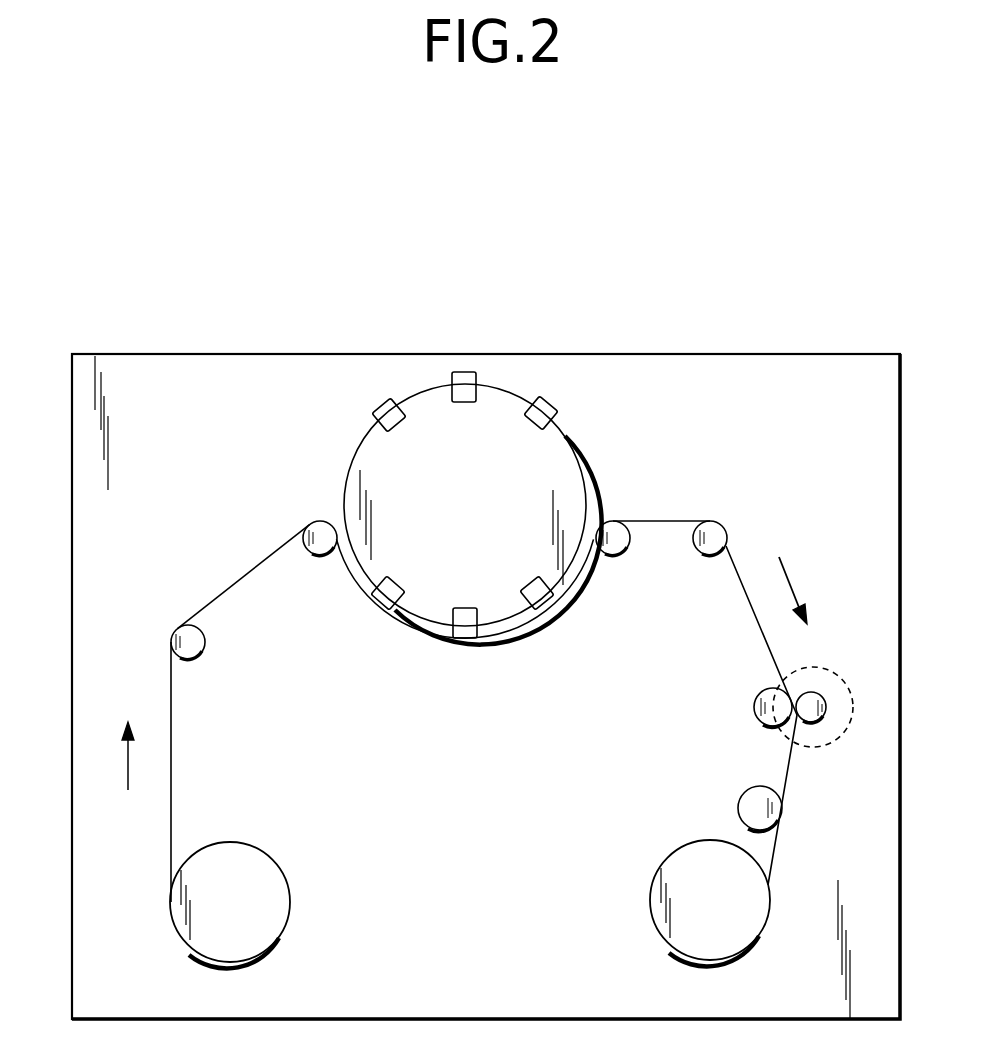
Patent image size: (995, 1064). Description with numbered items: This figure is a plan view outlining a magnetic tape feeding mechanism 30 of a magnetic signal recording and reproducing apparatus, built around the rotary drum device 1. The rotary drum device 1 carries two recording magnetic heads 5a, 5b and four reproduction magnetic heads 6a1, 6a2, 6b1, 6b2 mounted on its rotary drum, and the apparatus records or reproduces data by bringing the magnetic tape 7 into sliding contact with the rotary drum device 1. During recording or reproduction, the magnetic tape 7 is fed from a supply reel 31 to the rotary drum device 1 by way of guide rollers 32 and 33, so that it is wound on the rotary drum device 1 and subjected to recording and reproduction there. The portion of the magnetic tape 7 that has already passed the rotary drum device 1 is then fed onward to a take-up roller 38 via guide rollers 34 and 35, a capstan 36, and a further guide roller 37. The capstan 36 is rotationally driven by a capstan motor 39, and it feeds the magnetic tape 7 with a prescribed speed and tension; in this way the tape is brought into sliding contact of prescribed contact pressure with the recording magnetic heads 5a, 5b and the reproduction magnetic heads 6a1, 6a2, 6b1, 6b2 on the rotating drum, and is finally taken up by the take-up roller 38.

The rotary drum device 1 is at (585, 457).
The recording magnetic head 5a is at (465, 636).
The recording magnetic head 5b is at (465, 378).
The reproduction magnetic head 6a1 is at (385, 605).
The reproduction magnetic head 6a2 is at (544, 401).
The reproduction magnetic head 6b1 is at (542, 605).
The reproduction magnetic head 6b2 is at (388, 403).
The magnetic tape 7 is at (664, 520).
The magnetic tape feeding mechanism 30 is at (612, 292).
The supply reel 31 is at (232, 846).
The guide roller 32 is at (193, 655).
The guide roller 33 is at (321, 552).
The guide roller 34 is at (613, 552).
The guide roller 35 is at (710, 552).
The capstan 36 is at (818, 696).
The guide roller 37 is at (745, 803).
The take-up roller 38 is at (737, 943).
The capstan motor 39 is at (832, 748).